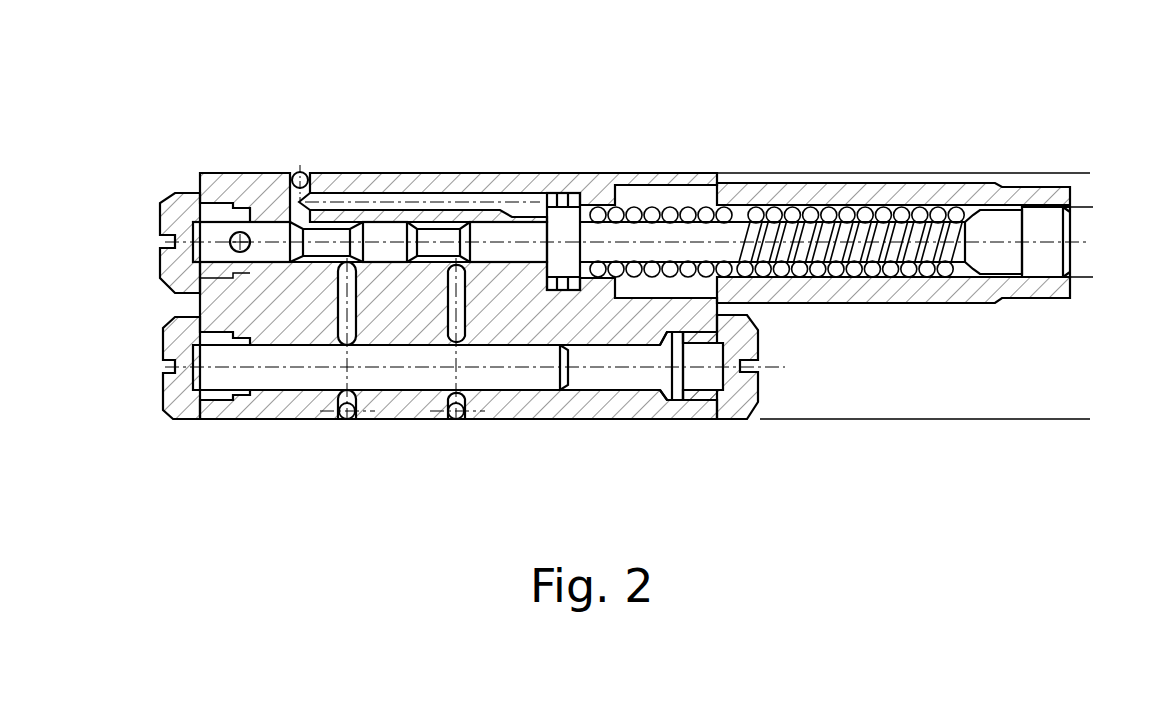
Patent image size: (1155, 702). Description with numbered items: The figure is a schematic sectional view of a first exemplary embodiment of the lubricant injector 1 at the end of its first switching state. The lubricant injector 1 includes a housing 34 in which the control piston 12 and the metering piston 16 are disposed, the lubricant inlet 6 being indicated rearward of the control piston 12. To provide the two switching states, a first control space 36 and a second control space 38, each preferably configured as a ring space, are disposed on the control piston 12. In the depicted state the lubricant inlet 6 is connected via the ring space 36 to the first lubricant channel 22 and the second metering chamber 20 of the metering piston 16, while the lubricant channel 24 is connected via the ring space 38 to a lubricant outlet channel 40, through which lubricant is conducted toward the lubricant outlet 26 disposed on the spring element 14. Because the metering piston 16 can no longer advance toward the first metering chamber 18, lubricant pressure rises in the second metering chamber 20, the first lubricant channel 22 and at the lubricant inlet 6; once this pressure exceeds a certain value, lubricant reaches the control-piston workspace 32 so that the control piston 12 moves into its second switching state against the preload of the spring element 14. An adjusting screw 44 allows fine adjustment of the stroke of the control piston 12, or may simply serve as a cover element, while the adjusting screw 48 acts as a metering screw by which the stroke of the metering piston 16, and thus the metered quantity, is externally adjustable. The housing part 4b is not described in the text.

The lubricant injector 1 is at (596, 104).
The housing part 4b is at (170, 395).
The lubricant inlet 6 is at (413, 264).
The control piston 12 is at (200, 237).
The spring element 14 is at (795, 210).
The metering piston 16 is at (223, 355).
The first metering chamber 18 is at (193, 392).
The second metering chamber 20 is at (633, 377).
The first lubricant channel 22 is at (457, 316).
The lubricant channel 24 is at (345, 317).
The lubricant outlet 26 is at (1047, 258).
The control-piston workspace 32 is at (198, 213).
The housing 34 is at (223, 190).
The first control space 36 is at (443, 222).
The second control space 38 is at (327, 222).
The lubricant outlet channel 40 is at (385, 202).
The adjusting screw 44 is at (173, 262).
The adjusting screw 48 is at (747, 400).